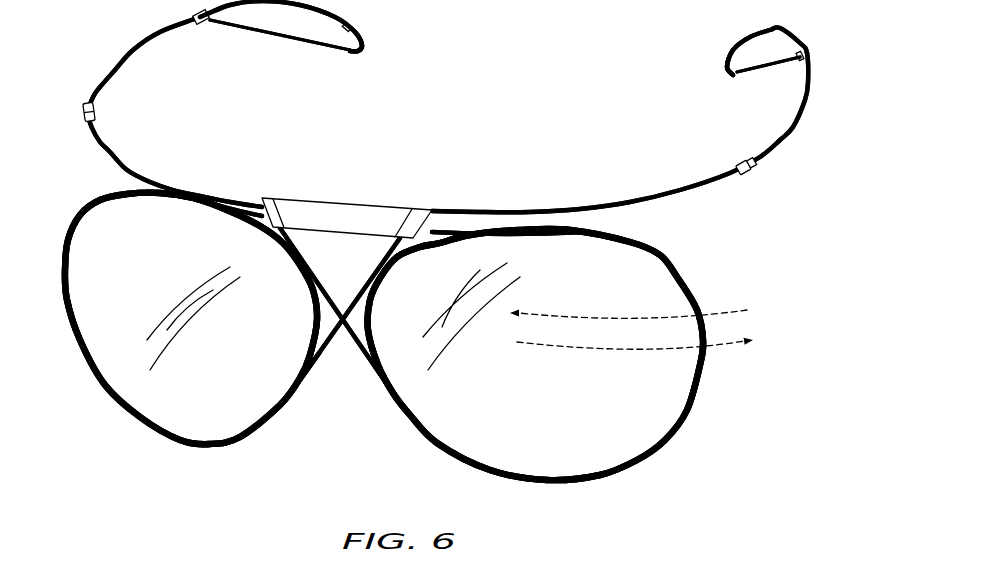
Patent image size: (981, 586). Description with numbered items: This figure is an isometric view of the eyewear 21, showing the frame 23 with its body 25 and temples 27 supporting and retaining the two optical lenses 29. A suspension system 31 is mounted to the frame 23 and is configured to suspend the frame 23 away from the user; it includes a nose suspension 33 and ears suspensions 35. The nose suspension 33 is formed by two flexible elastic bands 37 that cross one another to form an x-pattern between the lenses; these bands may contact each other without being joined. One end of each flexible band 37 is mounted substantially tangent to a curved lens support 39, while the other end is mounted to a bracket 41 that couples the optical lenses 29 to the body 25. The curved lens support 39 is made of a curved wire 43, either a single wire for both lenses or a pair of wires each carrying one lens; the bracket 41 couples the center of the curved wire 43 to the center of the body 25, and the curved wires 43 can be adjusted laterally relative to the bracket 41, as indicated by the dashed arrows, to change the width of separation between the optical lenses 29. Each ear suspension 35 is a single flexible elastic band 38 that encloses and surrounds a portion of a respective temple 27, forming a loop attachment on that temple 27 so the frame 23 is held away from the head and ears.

The eyewear 21 is at (438, 256).
The frame 23 is at (102, 88).
The body 25 is at (113, 152).
The temples 27 is at (130, 50).
The optical lenses 29 is at (390, 352).
The suspension system 31 is at (342, 78).
The nose suspension 33 is at (340, 323).
The ears suspensions 35 is at (503, 127).
The flexible elastic bands 37 is at (364, 288).
The flexible elastic band 38 is at (283, 40).
The curved lens support 39 is at (300, 387).
The bracket 41 is at (313, 200).
The curved wire 43 is at (660, 253).